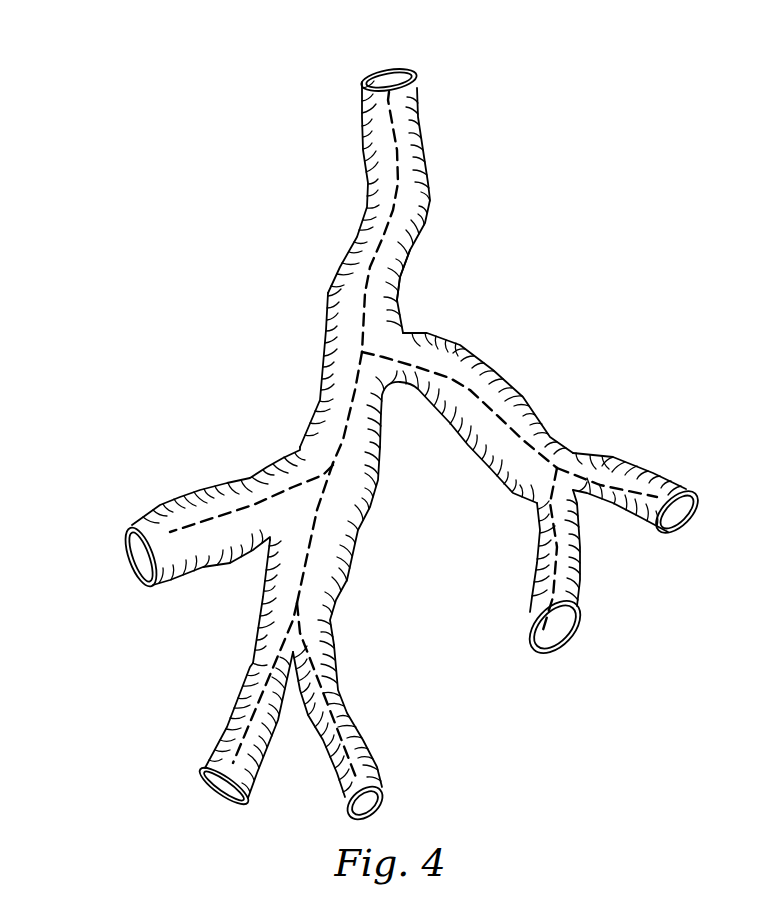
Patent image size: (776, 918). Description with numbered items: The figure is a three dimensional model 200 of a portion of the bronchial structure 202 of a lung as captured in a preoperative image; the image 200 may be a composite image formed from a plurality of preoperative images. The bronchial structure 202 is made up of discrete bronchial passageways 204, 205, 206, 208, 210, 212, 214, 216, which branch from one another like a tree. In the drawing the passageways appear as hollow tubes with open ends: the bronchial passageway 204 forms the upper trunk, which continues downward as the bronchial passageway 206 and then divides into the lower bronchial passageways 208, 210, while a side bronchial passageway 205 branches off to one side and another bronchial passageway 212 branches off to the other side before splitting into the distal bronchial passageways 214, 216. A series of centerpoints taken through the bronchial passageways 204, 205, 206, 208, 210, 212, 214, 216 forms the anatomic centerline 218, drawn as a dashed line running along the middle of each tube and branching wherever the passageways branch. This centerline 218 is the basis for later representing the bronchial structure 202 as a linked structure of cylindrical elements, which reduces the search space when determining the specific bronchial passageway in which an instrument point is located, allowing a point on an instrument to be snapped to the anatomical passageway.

The three dimensional model 200 is at (462, 137).
The bronchial structure 202 is at (326, 306).
The bronchial passageway 204 is at (368, 190).
The bronchial passageway 205 is at (170, 497).
The bronchial passageway 206 is at (333, 613).
The bronchial passageway 208 is at (217, 747).
The bronchial passageway 210 is at (377, 763).
The bronchial passageway 212 is at (503, 377).
The bronchial passageway 214 is at (633, 463).
The bronchial passageway 216 is at (528, 610).
The anatomic centerline 218 is at (400, 277).